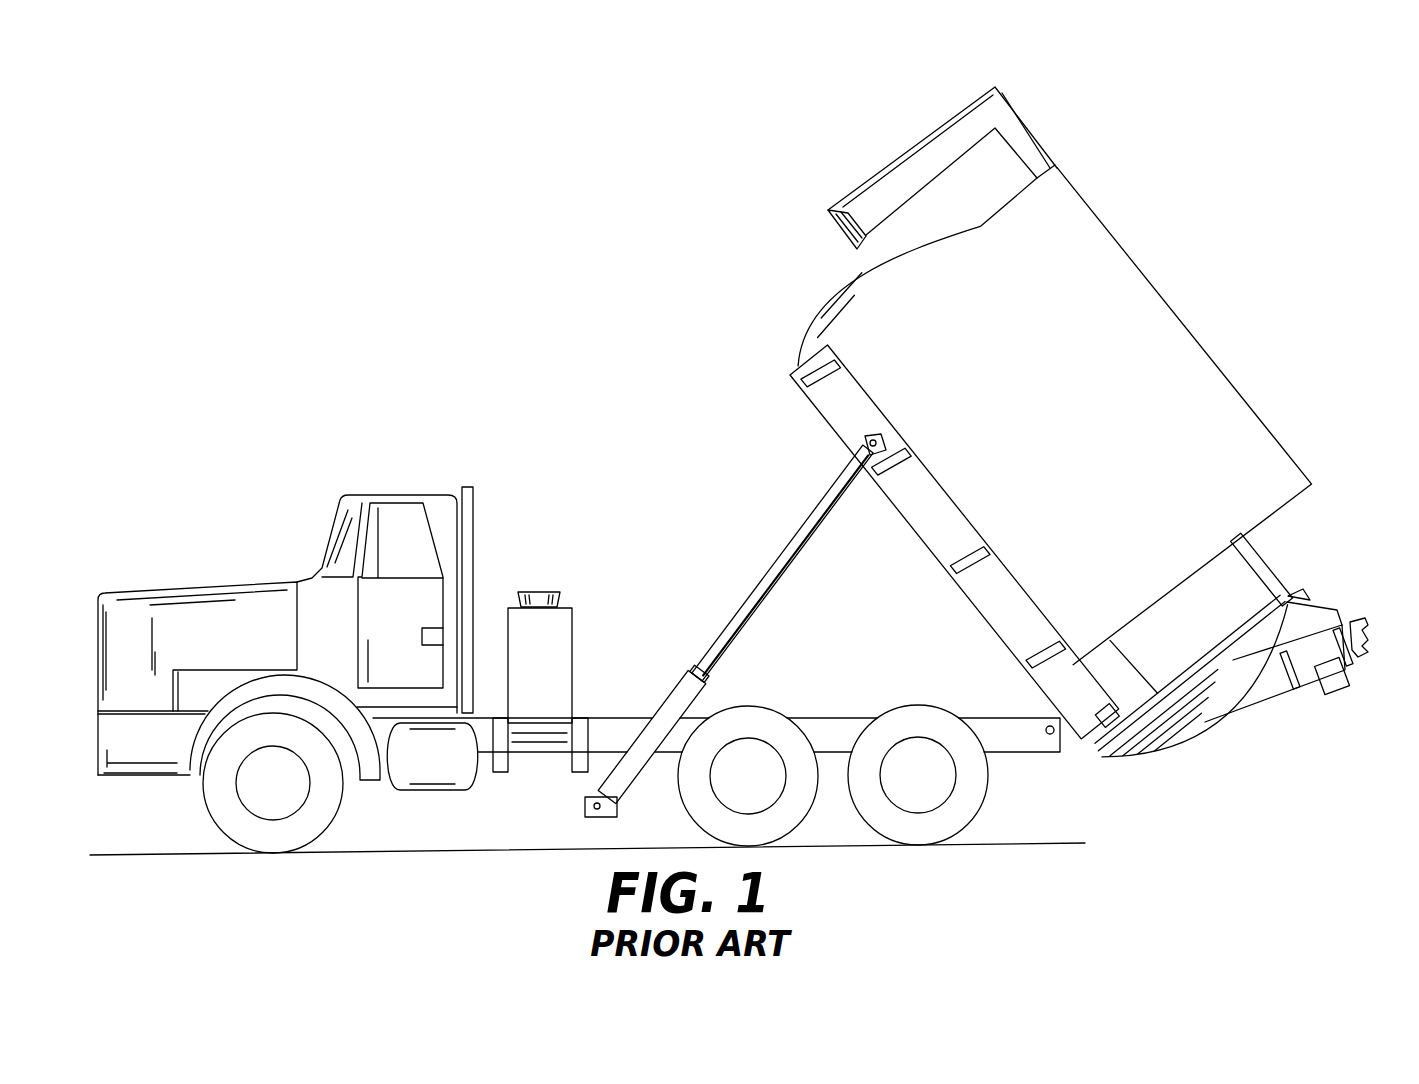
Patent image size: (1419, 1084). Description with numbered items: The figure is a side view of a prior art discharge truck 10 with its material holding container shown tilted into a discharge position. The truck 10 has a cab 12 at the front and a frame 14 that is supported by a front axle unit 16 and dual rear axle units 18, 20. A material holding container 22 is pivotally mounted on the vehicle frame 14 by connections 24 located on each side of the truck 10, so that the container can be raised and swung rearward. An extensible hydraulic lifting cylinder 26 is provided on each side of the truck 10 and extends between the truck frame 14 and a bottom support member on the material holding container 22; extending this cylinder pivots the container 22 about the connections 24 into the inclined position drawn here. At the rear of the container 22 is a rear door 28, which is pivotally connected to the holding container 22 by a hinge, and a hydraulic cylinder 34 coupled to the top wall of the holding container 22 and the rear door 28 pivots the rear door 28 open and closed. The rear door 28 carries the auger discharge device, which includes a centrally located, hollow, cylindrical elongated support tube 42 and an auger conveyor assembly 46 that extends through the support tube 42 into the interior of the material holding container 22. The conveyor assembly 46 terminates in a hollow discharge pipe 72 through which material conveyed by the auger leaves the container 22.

The truck 10 is at (616, 425).
The cab 12 is at (399, 495).
The frame 14 is at (566, 772).
The front axle unit 16 is at (258, 799).
The rear axle unit 18 is at (733, 792).
The rear axle unit 20 is at (903, 791).
The material holding container 22 is at (1119, 242).
The connections 24 is at (1050, 736).
The extensible hydraulic lifting cylinder 26 is at (742, 598).
The rear door 28 is at (1170, 752).
The hydraulic cylinder 34 is at (1275, 565).
The support tube 42 is at (1272, 698).
The auger conveyor assembly 46 is at (1350, 606).
The discharge pipe 72 is at (1342, 692).